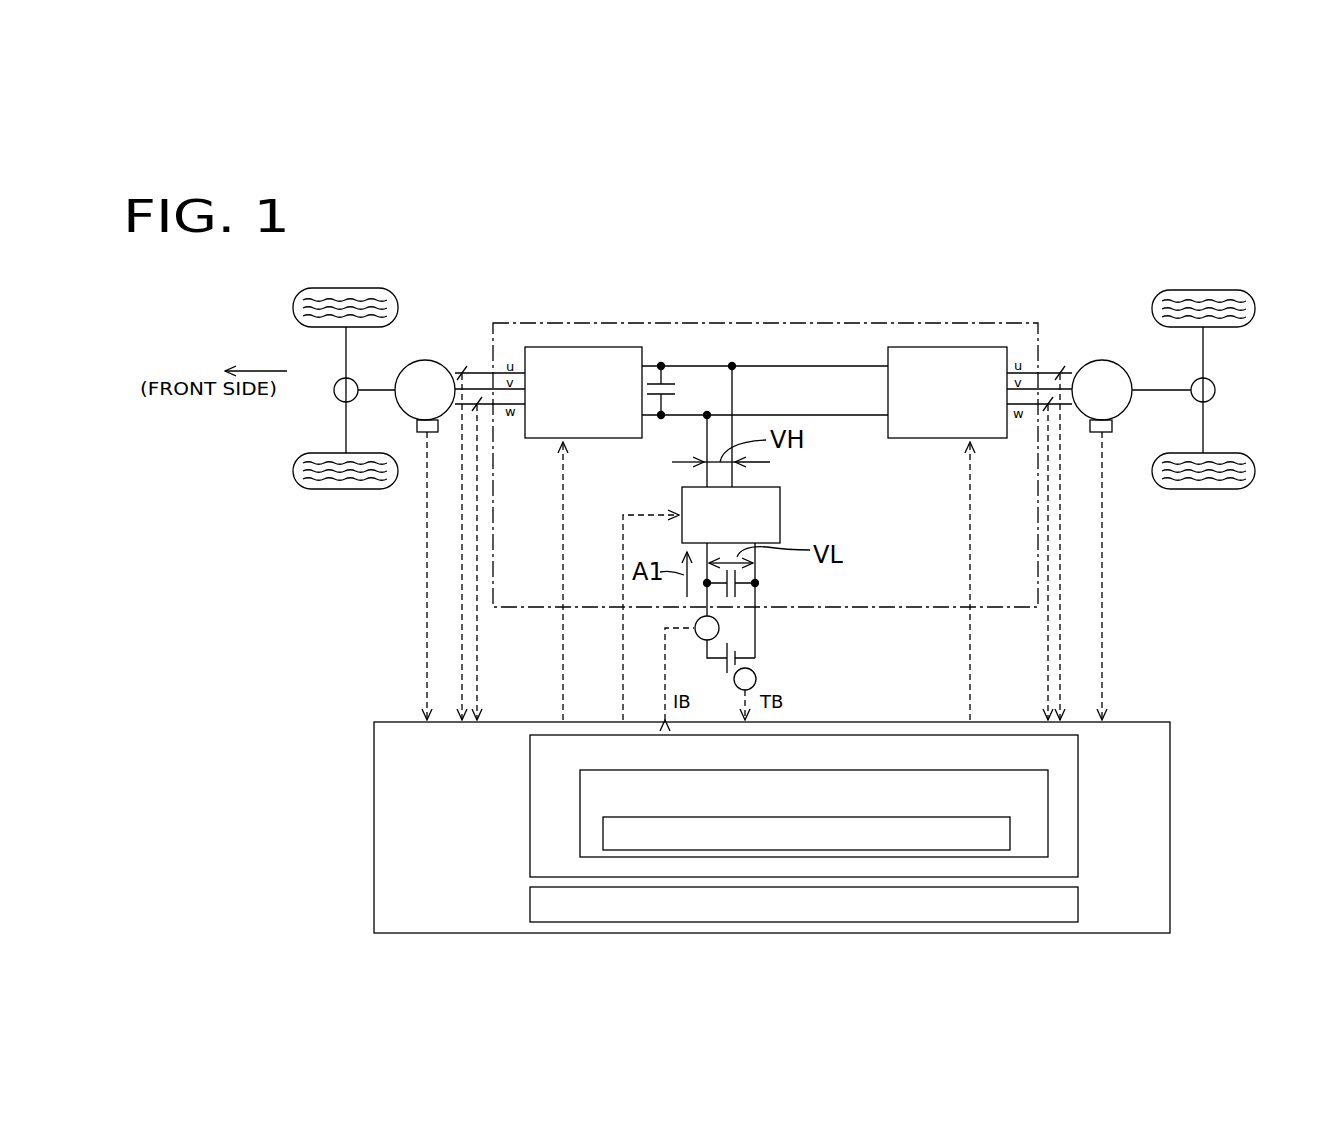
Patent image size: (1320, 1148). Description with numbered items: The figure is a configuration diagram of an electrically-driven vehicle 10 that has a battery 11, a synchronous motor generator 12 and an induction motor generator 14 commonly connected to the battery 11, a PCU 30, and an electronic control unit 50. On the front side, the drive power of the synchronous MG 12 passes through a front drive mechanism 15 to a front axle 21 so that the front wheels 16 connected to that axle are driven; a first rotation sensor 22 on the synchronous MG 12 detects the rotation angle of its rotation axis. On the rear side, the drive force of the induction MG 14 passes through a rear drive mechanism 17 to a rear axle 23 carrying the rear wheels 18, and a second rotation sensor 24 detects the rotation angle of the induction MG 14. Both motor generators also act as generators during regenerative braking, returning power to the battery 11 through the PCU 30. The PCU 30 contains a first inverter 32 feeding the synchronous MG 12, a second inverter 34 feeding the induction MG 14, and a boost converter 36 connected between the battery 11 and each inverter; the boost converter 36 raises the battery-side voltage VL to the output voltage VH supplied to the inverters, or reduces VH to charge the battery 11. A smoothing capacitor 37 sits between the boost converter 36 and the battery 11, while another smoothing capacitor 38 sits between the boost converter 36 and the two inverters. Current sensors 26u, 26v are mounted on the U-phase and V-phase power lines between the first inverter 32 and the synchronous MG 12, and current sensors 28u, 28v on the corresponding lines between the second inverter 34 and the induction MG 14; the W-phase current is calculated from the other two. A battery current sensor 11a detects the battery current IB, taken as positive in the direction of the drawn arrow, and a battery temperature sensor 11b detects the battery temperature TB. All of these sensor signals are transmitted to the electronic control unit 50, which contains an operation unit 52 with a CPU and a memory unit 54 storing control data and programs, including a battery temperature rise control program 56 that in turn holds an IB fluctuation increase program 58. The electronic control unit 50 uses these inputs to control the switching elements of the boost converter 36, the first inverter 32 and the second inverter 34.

The electrically-driven vehicle 10 is at (1014, 262).
The battery 11 is at (737, 650).
The battery current sensor 11a is at (695, 622).
The battery temperature sensor 11b is at (757, 676).
The synchronous motor generator 12 is at (430, 360).
The induction motor generator 14 is at (1103, 360).
The front drive mechanism 15 is at (334, 395).
The front wheels 16 is at (357, 288).
The rear drive mechanism 17 is at (1216, 388).
The rear wheels 18 is at (1213, 290).
The front axle 21 is at (348, 432).
The first rotation sensor 22 is at (420, 434).
The rear axle 23 is at (1205, 430).
The second rotation sensor 24 is at (1113, 427).
The current sensor 26u is at (462, 371).
The current sensor 26v is at (478, 405).
The current sensor 28u is at (1060, 372).
The current sensor 28v is at (1048, 405).
The PCU 30 is at (793, 318).
The first inverter 32 is at (614, 347).
The second inverter 34 is at (960, 347).
The boost converter 36 is at (780, 515).
The smoothing capacitor 37 is at (757, 585).
The smoothing capacitor 38 is at (666, 382).
The electronic control unit 50 is at (814, 827).
The operation unit 52 is at (1078, 903).
The memory unit 54 is at (843, 806).
The battery temperature rise control program 56 is at (862, 817).
The IB fluctuation increase program 58 is at (1010, 830).